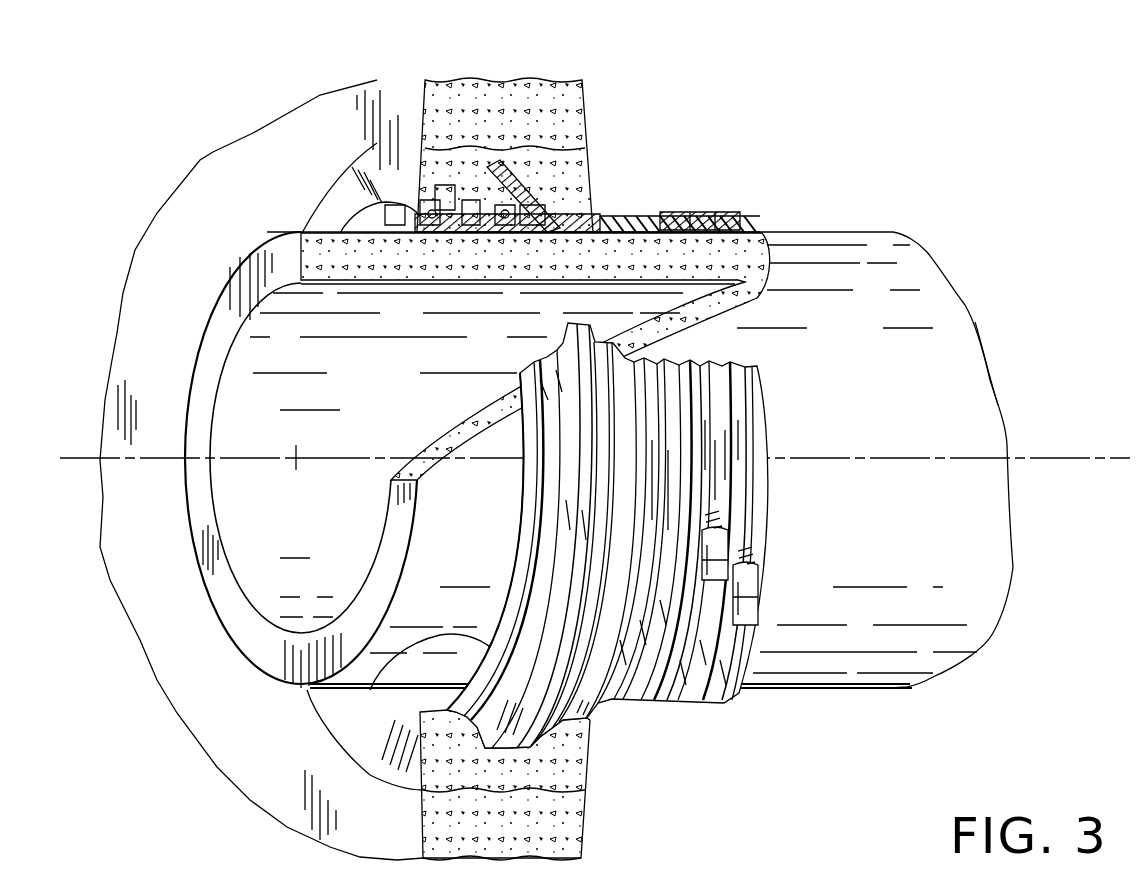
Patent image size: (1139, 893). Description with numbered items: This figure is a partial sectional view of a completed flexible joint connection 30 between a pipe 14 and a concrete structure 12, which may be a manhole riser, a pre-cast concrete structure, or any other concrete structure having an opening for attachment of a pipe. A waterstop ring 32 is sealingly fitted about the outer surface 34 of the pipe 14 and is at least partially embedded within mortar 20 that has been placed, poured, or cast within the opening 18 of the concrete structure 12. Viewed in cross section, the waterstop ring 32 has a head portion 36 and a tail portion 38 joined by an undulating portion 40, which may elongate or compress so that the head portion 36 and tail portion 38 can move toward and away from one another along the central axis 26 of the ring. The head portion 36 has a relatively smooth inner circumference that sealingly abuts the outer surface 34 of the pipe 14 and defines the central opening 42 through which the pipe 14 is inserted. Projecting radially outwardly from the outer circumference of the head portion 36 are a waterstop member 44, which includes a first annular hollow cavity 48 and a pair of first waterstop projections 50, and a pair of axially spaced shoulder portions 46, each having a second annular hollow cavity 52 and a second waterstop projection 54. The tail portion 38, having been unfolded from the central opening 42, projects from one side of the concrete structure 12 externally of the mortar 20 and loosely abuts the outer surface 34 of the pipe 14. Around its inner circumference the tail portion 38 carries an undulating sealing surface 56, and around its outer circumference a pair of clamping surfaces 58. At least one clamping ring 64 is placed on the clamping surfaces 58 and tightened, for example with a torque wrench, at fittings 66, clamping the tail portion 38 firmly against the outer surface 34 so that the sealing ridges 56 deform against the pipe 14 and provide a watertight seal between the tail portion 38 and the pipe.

The concrete structure 12 is at (220, 168).
The pipe 14 is at (973, 317).
The opening 18 is at (570, 152).
The mortar 20 is at (337, 217).
The central axis 26 is at (115, 458).
The flexible joint connection 30 is at (986, 178).
The waterstop ring 32 is at (505, 560).
The outer surface 34 is at (950, 380).
The head portion 36 is at (441, 165).
The tail portion 38 is at (677, 185).
The undulating portion 40 is at (612, 228).
The central opening 42 is at (367, 677).
The waterstop member 44 is at (482, 200).
The shoulder portions 46 is at (395, 211).
The first annular hollow cavity 48 is at (477, 205).
The first waterstop projections 50 is at (530, 207).
The second annular hollow cavities 52 is at (430, 207).
The second waterstop projections 54 is at (440, 187).
The undulating sealing surface 56 is at (700, 236).
The clamping surfaces 58 is at (720, 212).
The clamping ring 64 is at (683, 210).
The fittings 66 is at (750, 585).